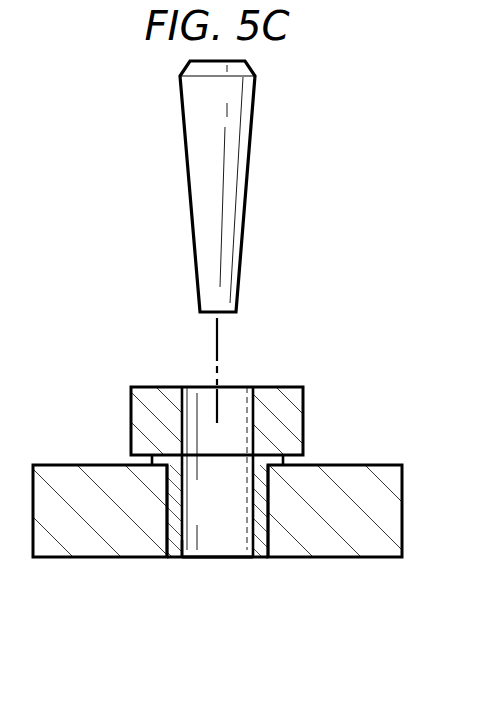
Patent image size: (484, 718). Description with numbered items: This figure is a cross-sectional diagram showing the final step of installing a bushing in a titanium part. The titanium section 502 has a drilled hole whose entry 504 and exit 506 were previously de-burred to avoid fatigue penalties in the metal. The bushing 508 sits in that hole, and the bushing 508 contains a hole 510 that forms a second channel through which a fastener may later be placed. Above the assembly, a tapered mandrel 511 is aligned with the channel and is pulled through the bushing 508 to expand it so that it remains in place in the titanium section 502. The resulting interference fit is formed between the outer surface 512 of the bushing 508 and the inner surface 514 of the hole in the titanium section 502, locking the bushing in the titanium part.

The mandrel 511 is at (190, 207).
The bushing 508 is at (162, 453).
The titanium section 502 is at (343, 465).
The entry 504 is at (170, 470).
The inner surface 514 is at (167, 530).
The exit 506 is at (172, 552).
The hole 510 is at (218, 548).
The outer surface 512 is at (240, 549).